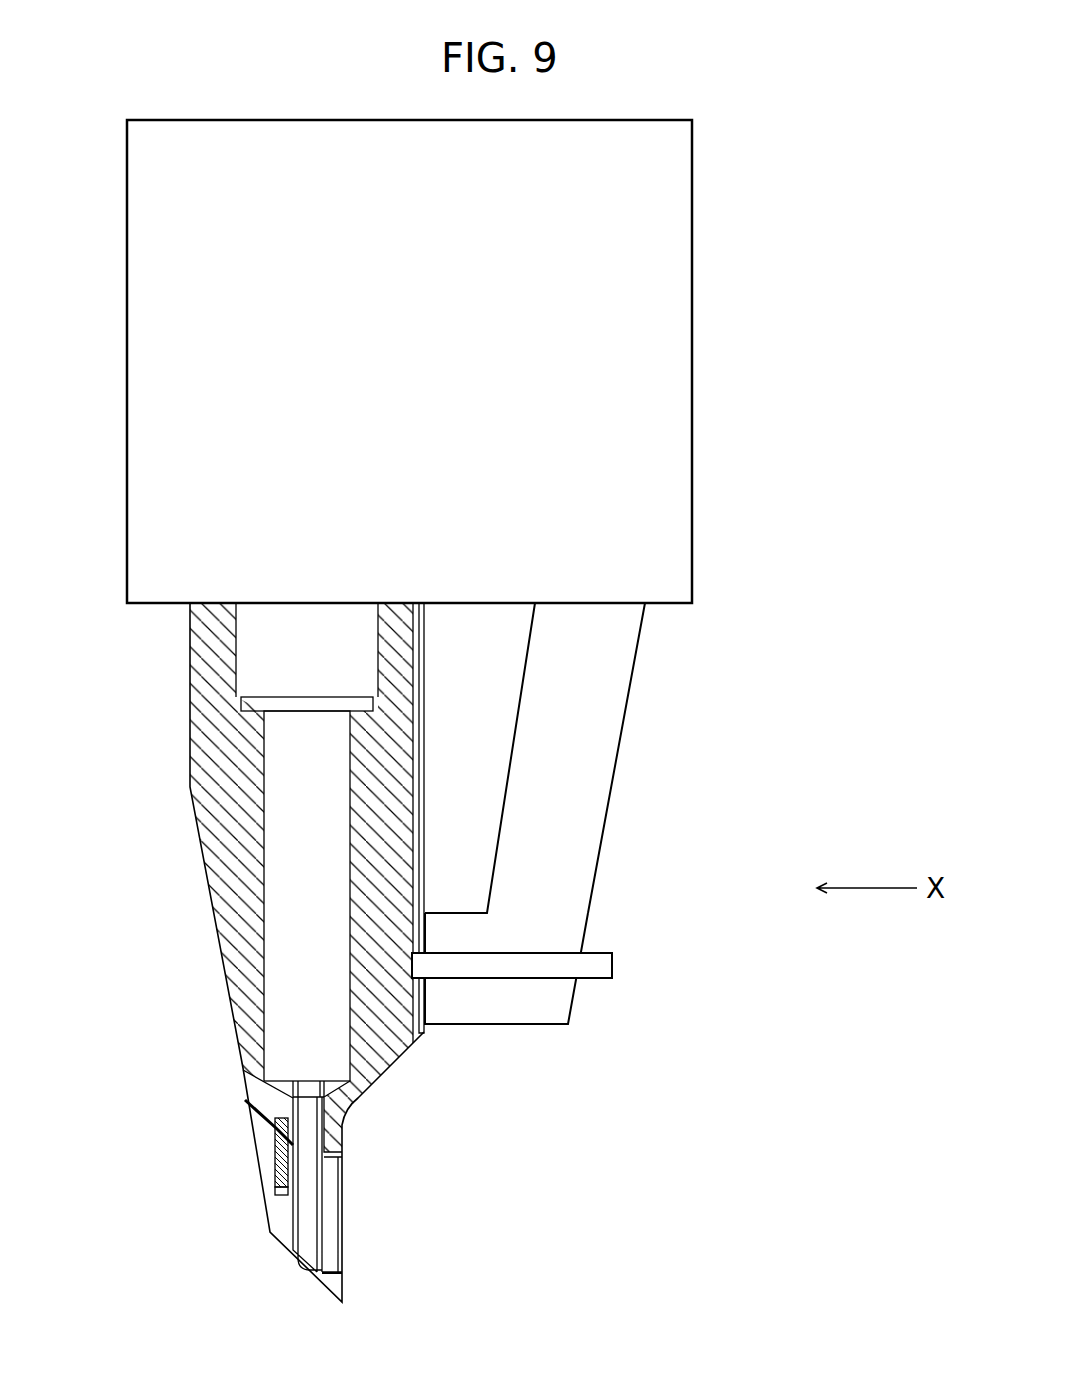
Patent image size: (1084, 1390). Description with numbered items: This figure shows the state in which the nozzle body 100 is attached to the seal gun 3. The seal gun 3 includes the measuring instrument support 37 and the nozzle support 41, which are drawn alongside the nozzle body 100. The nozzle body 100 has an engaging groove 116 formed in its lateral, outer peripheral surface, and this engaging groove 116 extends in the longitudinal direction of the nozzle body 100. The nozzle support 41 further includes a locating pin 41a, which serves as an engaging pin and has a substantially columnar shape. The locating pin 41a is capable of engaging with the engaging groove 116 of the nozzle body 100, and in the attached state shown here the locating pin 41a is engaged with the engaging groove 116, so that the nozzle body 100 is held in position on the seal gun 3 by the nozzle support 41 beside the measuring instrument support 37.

The seal gun 3 is at (673, 355).
The nozzle body 100 is at (190, 790).
The engaging groove 116 is at (420, 791).
The measuring instrument support 37 is at (590, 805).
The nozzle support 41 is at (467, 1005).
The locating pin 41a is at (600, 967).